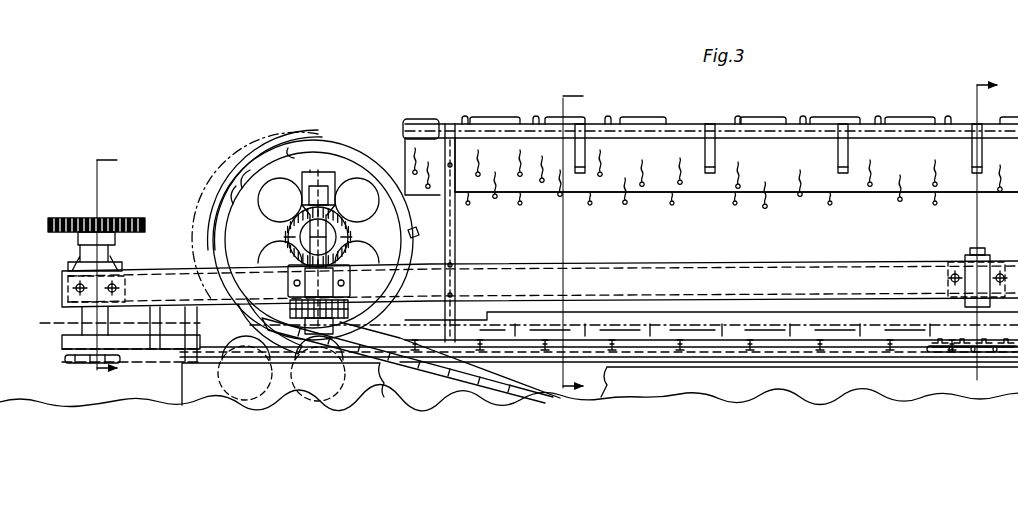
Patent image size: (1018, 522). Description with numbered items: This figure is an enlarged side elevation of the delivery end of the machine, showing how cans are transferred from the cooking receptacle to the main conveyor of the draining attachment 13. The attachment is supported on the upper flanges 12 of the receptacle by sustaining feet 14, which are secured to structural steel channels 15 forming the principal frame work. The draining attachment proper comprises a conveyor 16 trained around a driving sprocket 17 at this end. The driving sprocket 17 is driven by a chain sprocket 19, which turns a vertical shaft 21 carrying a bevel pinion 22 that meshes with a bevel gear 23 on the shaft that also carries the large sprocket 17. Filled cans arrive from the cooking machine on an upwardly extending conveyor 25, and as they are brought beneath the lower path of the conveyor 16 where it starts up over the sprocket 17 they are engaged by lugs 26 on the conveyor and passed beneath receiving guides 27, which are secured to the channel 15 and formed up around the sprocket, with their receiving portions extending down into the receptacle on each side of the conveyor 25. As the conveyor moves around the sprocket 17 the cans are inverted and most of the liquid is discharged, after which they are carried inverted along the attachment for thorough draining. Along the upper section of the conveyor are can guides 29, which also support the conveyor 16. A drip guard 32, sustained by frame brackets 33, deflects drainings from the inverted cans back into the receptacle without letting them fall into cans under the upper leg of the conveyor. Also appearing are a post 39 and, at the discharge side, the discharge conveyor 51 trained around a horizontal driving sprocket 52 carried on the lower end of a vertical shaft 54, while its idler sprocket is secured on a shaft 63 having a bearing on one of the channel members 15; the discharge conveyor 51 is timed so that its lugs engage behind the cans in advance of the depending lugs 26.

The upper flanges 12 is at (62, 348).
The draining attachment 13 is at (318, 404).
The feet 14 is at (575, 235).
The structural steel channels 15 is at (155, 283).
The conveyor 16 is at (745, 332).
The driving sprocket 17 is at (343, 162).
The chain sprocket 19 is at (350, 306).
The vertical shaft 21 is at (262, 176).
The bevel pinion 22 is at (331, 250).
The bevel gear 23 is at (349, 236).
The upwardly extending conveyor 25 is at (500, 395).
The lugs 26 is at (606, 125).
The receiving guides 27 is at (235, 300).
The can guides 29 is at (548, 338).
The drip guard 32 is at (752, 194).
The frame brackets 33 is at (585, 150).
The post 39 is at (456, 240).
The discharge conveyor 51 is at (80, 364).
The horizontal sprocket 52 is at (64, 359).
The vertical shaft 54 is at (78, 244).
The shaft 63 is at (972, 250).